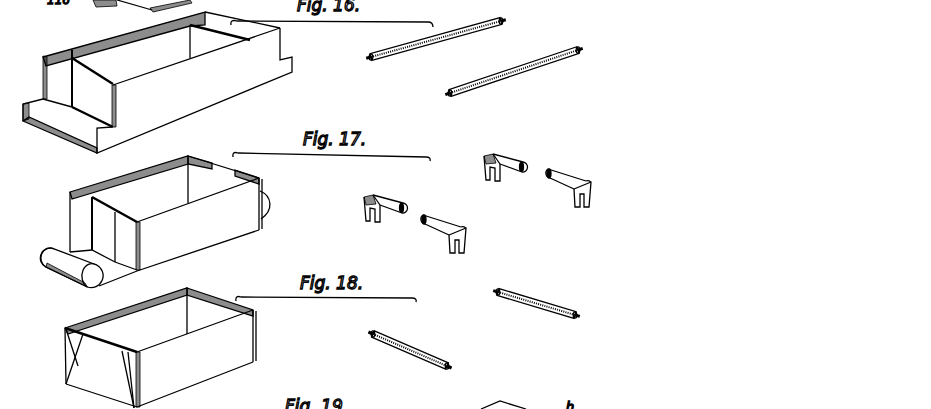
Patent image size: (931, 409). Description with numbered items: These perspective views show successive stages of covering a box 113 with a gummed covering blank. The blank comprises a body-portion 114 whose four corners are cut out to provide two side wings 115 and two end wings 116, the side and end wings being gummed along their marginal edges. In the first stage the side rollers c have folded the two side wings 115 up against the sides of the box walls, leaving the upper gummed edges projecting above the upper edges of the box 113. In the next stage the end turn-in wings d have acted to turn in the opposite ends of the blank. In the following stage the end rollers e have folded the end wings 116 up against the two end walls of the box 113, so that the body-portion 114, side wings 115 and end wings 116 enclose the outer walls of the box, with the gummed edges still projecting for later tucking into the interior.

In FIG. 16, the box 113 is at (105, 50).
In FIG. 17, the box 113 is at (113, 186).
In FIG. 18, the box 113 is at (122, 322).
In FIG. 16, the body-portion 114 is at (192, 112).
In FIG. 17, the body-portion 114 is at (201, 248).
In FIG. 18, the body-portion 114 is at (193, 384).
In FIG. 16, the side wings 115 is at (127, 34).
In FIG. 17, the side wings 115 is at (140, 174).
In FIG. 18, the side wings 115 is at (89, 324).
In FIG. 16, the end wings 116 is at (72, 143).
In FIG. 17, the end wings 116 is at (60, 281).
In FIG. 18, the end wings 116 is at (217, 298).
In FIG. 16, the side rollers c is at (474, 57).
In FIG. 17, the end turn-in wings d is at (477, 198).
In FIG. 18, the end rollers e is at (473, 329).